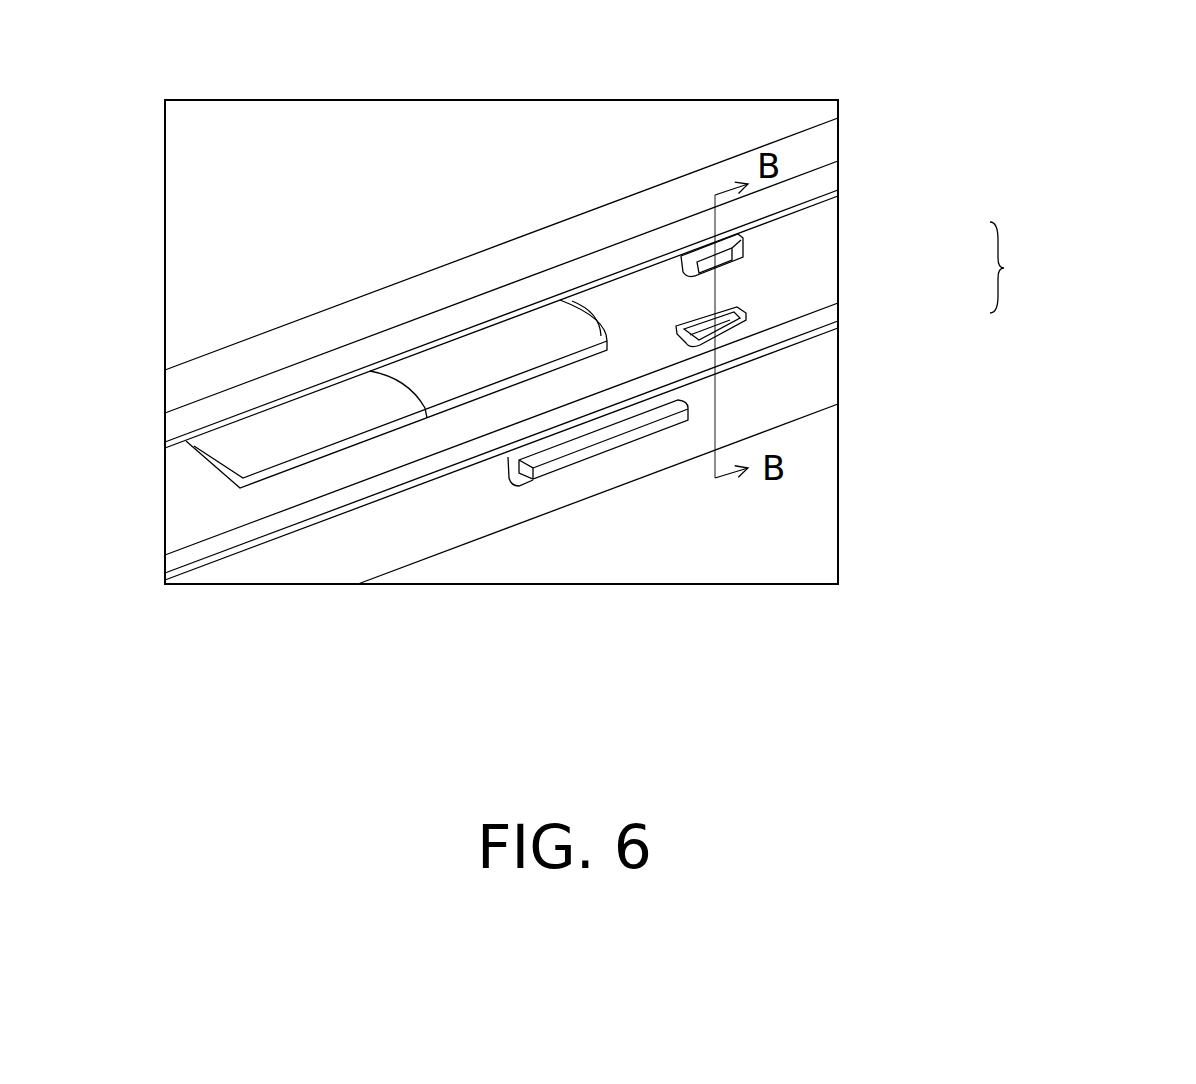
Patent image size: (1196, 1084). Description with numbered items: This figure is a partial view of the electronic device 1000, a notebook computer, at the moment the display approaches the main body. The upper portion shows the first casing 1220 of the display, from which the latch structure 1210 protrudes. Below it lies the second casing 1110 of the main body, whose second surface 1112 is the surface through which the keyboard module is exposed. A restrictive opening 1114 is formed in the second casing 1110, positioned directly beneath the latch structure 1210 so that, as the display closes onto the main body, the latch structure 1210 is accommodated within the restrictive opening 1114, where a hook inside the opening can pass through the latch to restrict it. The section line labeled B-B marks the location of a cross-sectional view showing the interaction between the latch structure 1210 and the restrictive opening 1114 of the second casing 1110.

The electronic device 1000 is at (1162, 692).
The second casing 1110 is at (1027, 267).
The second surface 1112 is at (790, 312).
The restrictive opening 1114 is at (725, 312).
The latch structure 1210 is at (743, 242).
The first casing 1220 is at (820, 148).